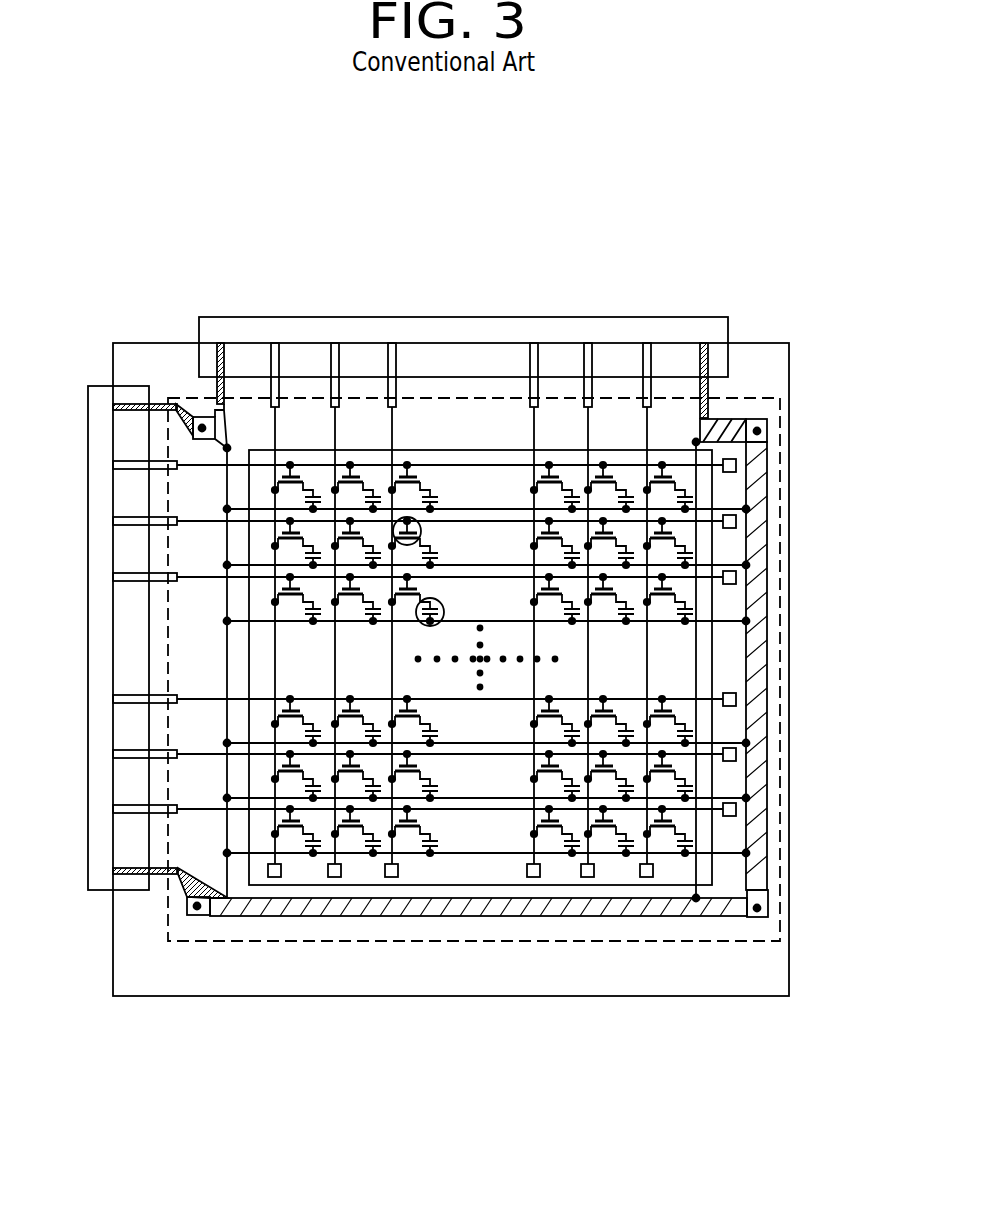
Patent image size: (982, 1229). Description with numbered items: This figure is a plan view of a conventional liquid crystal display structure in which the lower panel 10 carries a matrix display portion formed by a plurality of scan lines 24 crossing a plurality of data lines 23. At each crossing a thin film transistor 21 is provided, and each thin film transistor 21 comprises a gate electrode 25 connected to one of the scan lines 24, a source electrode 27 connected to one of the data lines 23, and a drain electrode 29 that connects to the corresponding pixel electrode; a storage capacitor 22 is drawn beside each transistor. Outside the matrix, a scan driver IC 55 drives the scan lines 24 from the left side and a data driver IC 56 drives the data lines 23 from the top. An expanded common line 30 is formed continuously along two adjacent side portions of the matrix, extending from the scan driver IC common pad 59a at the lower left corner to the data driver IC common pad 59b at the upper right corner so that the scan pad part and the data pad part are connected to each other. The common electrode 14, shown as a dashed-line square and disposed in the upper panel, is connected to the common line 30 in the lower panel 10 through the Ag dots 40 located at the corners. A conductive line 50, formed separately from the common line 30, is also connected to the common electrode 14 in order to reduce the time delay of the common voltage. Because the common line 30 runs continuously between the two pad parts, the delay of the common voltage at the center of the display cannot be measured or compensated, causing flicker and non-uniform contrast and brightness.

The lower panel 10 is at (680, 996).
The common electrode 14 is at (438, 941).
The thin film transistor 21 is at (421, 532).
The storage capacitor 22 is at (443, 606).
The data line 23 is at (647, 661).
The scan line 24 is at (477, 463).
The gate electrode 25 is at (407, 478).
The source electrode 27 is at (340, 600).
The drain electrode 29 is at (312, 490).
The expanded common line 30 is at (758, 810).
The Ag dot 40 is at (202, 428).
The conductive line 50 is at (227, 660).
The scan driver IC 55 is at (98, 540).
The data driver IC 56 is at (613, 328).
The scan driver IC common pad 59a is at (135, 404).
The data driver IC common pad 59b is at (222, 372).